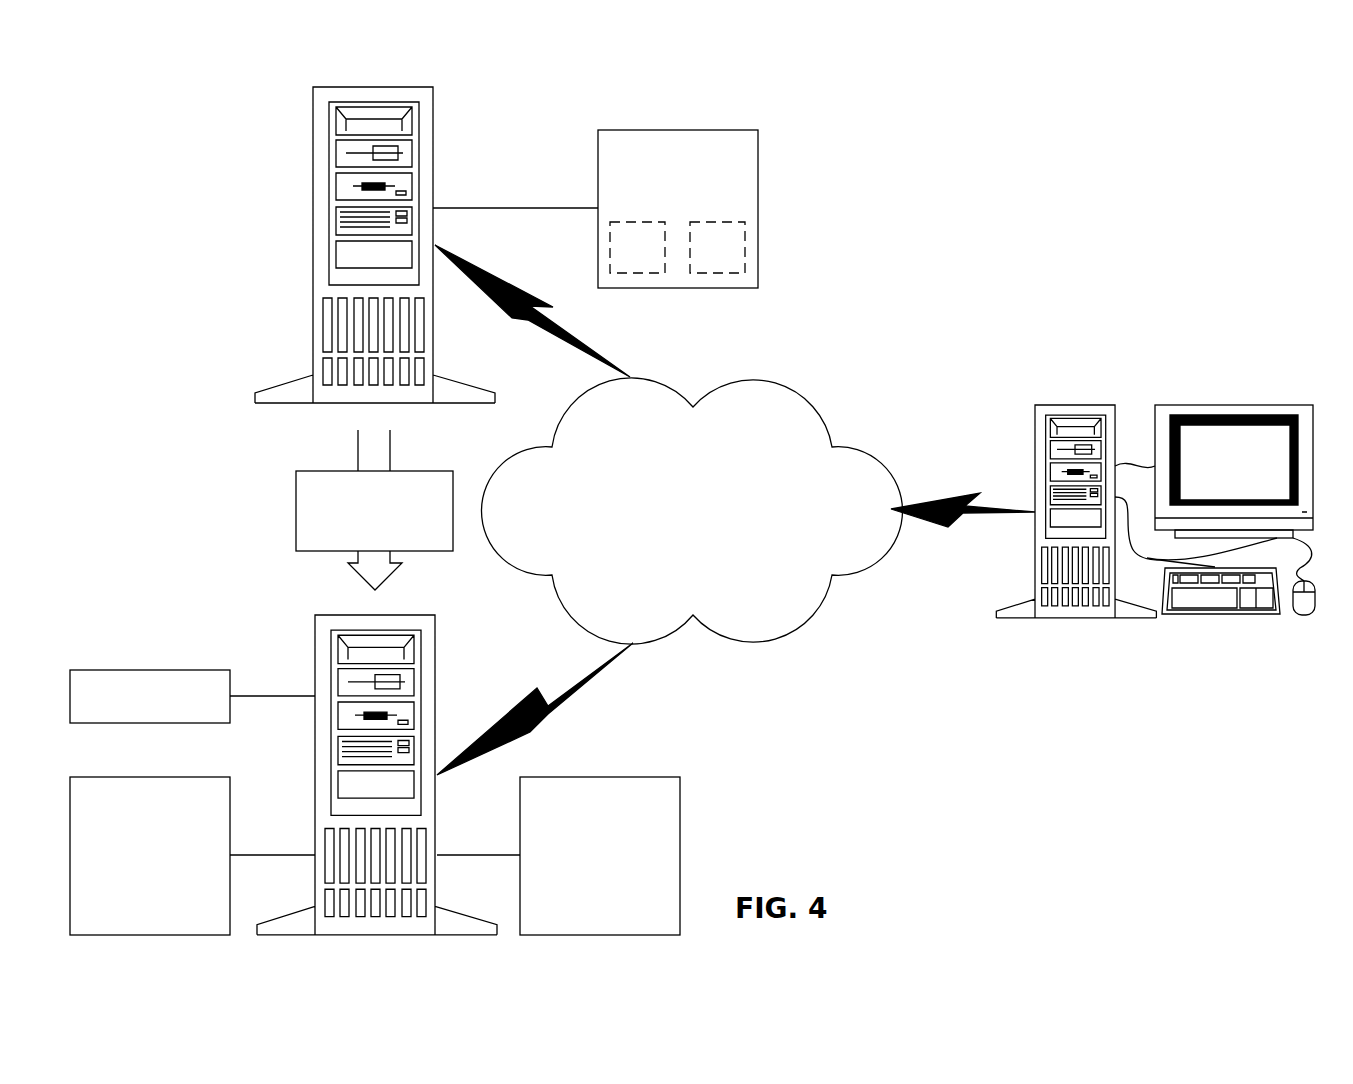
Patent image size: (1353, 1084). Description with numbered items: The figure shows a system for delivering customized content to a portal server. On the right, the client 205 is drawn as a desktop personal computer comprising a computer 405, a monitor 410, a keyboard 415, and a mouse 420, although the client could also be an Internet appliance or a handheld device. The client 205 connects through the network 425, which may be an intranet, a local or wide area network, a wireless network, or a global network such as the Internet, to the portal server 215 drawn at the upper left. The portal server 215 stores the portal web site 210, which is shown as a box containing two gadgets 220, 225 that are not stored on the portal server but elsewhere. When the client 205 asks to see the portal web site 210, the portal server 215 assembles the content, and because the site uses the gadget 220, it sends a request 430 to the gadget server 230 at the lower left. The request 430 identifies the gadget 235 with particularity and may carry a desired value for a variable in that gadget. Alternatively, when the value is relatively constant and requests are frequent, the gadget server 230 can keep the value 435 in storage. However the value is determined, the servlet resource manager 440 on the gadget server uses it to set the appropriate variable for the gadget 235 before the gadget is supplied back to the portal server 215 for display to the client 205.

The client 205 is at (1050, 352).
The portal web site 210 is at (640, 128).
The portal server 215 is at (313, 128).
The gadget 220 is at (640, 273).
The gadget 225 is at (718, 273).
The gadget server 230 is at (315, 640).
The gadget 235 is at (190, 777).
The computer 405 is at (1085, 405).
The monitor 410 is at (1196, 405).
The keyboard 415 is at (1200, 614).
The mouse 420 is at (1303, 615).
The network 425 is at (757, 378).
The request 430 is at (296, 506).
The value 435 is at (187, 670).
The servlet resource manager 440 is at (640, 777).